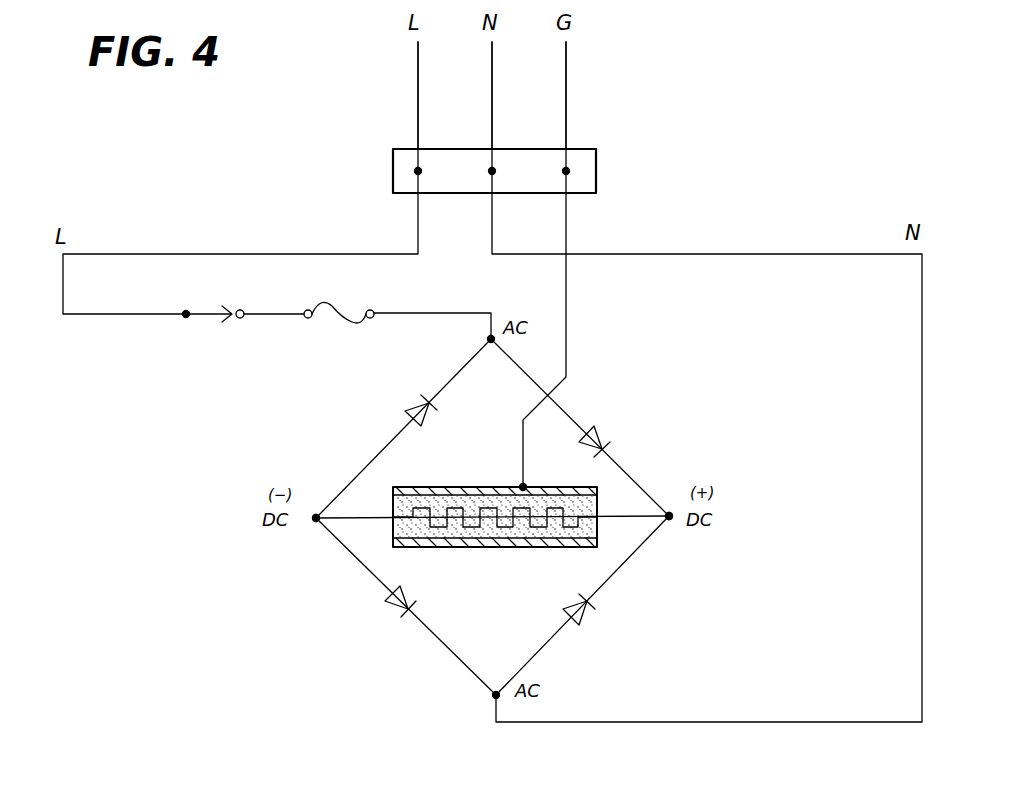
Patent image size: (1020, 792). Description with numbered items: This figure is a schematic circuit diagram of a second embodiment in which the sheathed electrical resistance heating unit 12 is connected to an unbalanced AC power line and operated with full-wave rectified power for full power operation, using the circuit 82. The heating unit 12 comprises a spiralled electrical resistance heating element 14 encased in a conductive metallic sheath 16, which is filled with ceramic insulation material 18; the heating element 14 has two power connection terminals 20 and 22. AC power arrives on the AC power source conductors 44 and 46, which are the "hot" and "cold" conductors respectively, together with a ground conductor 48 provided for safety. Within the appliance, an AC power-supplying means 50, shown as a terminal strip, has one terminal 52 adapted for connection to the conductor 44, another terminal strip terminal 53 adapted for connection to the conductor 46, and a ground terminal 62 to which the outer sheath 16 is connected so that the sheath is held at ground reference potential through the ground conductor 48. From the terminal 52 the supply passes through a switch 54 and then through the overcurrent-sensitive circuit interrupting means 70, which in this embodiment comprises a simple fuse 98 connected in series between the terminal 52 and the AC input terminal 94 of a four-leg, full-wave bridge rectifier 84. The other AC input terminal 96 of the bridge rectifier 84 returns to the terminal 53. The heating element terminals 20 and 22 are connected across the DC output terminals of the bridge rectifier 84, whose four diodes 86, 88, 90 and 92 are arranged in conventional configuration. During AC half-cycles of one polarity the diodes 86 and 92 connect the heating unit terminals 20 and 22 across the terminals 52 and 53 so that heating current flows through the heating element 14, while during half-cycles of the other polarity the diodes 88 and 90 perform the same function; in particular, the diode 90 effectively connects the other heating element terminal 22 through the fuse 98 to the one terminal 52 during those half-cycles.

The sheathed electrical resistance heating unit 12 is at (525, 572).
The electrical resistance heating element 14 is at (460, 530).
The conductive metallic sheath 16 is at (570, 546).
The ceramic insulation material 18 is at (470, 500).
The heating element terminal 20 is at (314, 522).
The heating element terminal 22 is at (670, 512).
The AC power source conductor 44 is at (418, 73).
The AC power source conductor 46 is at (492, 82).
The ground conductor 48 is at (566, 70).
The AC power-supplying means 50 is at (596, 180).
The terminal 52 is at (414, 171).
The terminal strip terminal 53 is at (488, 170).
The switch 54 is at (204, 316).
The ground terminal 62 is at (562, 170).
The overcurrent-sensitive circuit interrupting means 70 is at (384, 306).
The circuit 82 is at (300, 614).
The full-wave bridge rectifier 84 is at (694, 384).
The diode 86 is at (405, 408).
The diode 88 is at (391, 607).
The diode 90 is at (597, 430).
The diode 92 is at (584, 618).
The AC input terminal 94 is at (491, 339).
The AC input terminal 96 is at (496, 695).
The fuse 98 is at (330, 320).